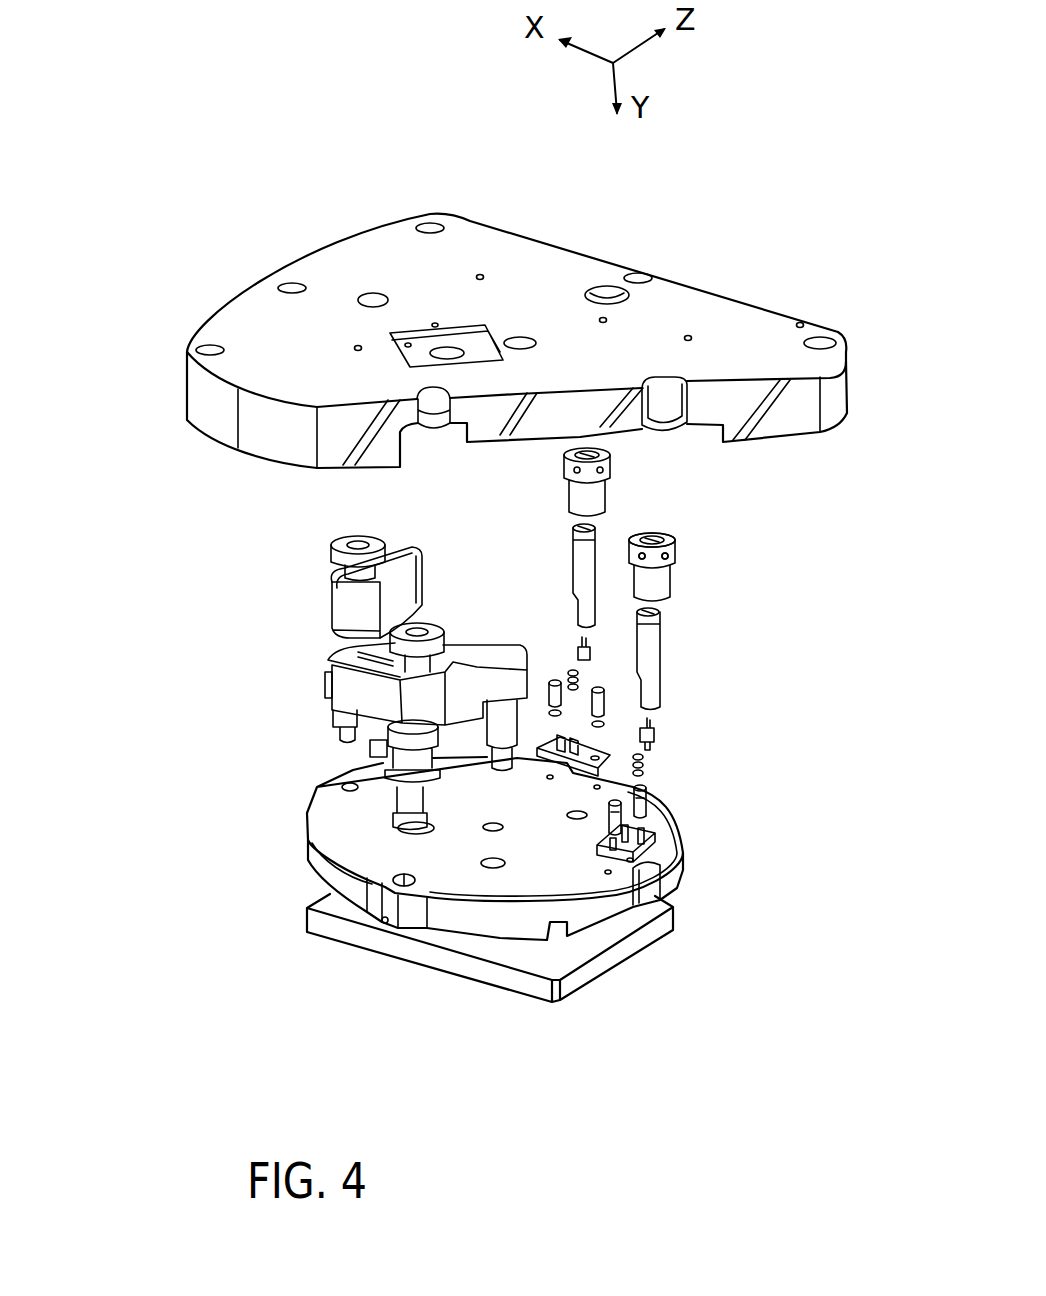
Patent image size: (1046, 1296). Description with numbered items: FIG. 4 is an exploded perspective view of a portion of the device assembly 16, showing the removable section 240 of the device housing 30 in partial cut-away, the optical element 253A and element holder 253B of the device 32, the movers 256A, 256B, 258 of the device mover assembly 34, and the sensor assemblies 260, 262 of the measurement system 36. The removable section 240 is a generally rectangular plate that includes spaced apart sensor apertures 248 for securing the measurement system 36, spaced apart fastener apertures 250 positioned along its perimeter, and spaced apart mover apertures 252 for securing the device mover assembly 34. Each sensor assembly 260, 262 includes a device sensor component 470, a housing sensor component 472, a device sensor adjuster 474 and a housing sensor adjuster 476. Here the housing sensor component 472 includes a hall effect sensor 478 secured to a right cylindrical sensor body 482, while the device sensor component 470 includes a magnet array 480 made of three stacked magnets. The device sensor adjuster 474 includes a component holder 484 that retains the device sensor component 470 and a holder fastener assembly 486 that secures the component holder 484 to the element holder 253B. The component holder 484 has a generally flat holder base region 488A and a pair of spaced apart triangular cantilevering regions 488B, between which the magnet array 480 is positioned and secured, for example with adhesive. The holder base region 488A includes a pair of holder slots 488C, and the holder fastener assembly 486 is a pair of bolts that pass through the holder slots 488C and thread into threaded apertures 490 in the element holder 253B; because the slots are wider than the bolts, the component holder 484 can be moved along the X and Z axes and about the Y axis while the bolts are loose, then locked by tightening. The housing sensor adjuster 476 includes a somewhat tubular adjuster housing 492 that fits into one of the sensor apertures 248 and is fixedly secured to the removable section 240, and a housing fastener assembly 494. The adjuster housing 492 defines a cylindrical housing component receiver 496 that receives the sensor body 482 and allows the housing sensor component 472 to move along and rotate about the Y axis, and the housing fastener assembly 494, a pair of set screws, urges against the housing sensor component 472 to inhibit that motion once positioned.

The device assembly 16 is at (738, 152).
The device housing 30 is at (510, 217).
The removable section 240 is at (536, 267).
The fastener apertures 250 is at (428, 226).
The mover apertures 252 is at (378, 298).
The sensor apertures 248 is at (603, 294).
The measurement system 36 is at (701, 535).
The sensor assembly 262 is at (611, 458).
The sensor assembly 260 is at (663, 534).
The housing sensor adjuster 476 is at (752, 548).
The housing component receiver 496 is at (672, 540).
The housing fastener assembly 494 is at (673, 555).
The adjuster housing 492 is at (673, 580).
The housing sensor component 472 is at (744, 679).
The sensor body 482 is at (662, 658).
The hall effect sensor 478 is at (656, 732).
The magnet array 480 is at (646, 762).
The device sensor component 470 is at (651, 772).
The device sensor adjuster 474 is at (752, 814).
The holder fastener assembly 486 is at (648, 792).
The component holder 484 is at (652, 800).
The device mover assembly 34 is at (312, 685).
The mover 256A is at (330, 604).
The mover 258 is at (400, 692).
The mover 256B is at (364, 767).
The device 32 is at (607, 879).
The element holder 253B is at (675, 871).
The optical element 253A is at (668, 930).
The holder base region 488A is at (600, 848).
The cantilevering regions 488B is at (616, 840).
The holder slots 488C is at (607, 852).
The threaded apertures 490 is at (608, 875).